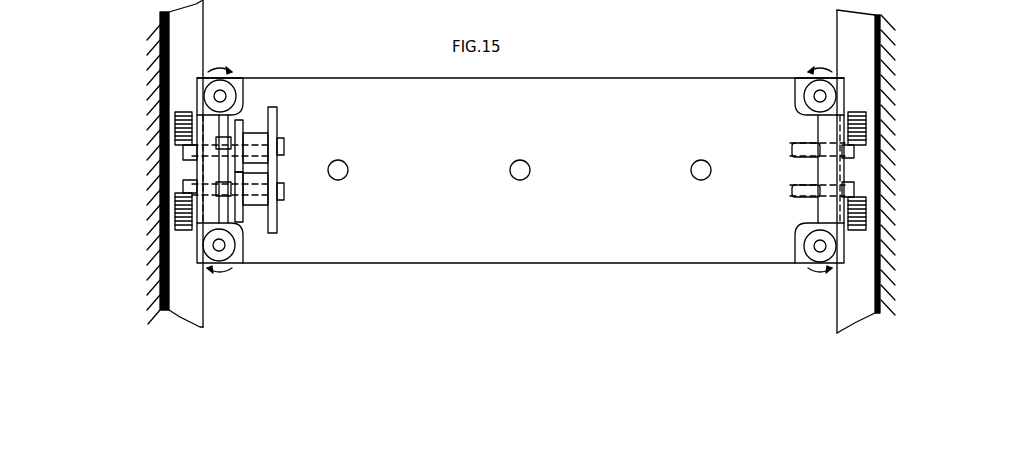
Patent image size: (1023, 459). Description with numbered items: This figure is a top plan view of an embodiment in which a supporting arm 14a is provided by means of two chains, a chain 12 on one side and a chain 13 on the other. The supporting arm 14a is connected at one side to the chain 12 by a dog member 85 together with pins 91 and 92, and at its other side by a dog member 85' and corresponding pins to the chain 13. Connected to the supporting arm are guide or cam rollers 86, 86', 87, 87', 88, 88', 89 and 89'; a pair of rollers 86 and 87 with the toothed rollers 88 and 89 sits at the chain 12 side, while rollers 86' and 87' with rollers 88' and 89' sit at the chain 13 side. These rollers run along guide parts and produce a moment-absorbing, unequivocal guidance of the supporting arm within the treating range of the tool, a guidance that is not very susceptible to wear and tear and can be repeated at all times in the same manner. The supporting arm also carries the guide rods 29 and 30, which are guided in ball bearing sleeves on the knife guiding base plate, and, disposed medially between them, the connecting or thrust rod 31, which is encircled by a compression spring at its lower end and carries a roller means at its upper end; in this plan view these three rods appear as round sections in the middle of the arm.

The chain 12 is at (275, 110).
The chain 13 is at (792, 191).
The supporting arm 14a is at (590, 247).
The guide rod 29 is at (346, 162).
The guide rod 30 is at (693, 163).
The connecting or thrust rod 31 is at (528, 162).
The dog member 85 is at (164, 169).
The dog member 85' is at (879, 169).
The guide or cam roller 86 is at (169, 91).
The guide or cam roller 86' is at (867, 89).
The guide or cam roller 87 is at (171, 250).
The guide or cam roller 87' is at (870, 248).
The guide or cam roller 88 is at (146, 136).
The guide or cam roller 88' is at (907, 130).
The guide or cam roller 89 is at (146, 205).
The guide or cam roller 89' is at (907, 206).
The pin 91 is at (225, 150).
The pin 92 is at (222, 185).